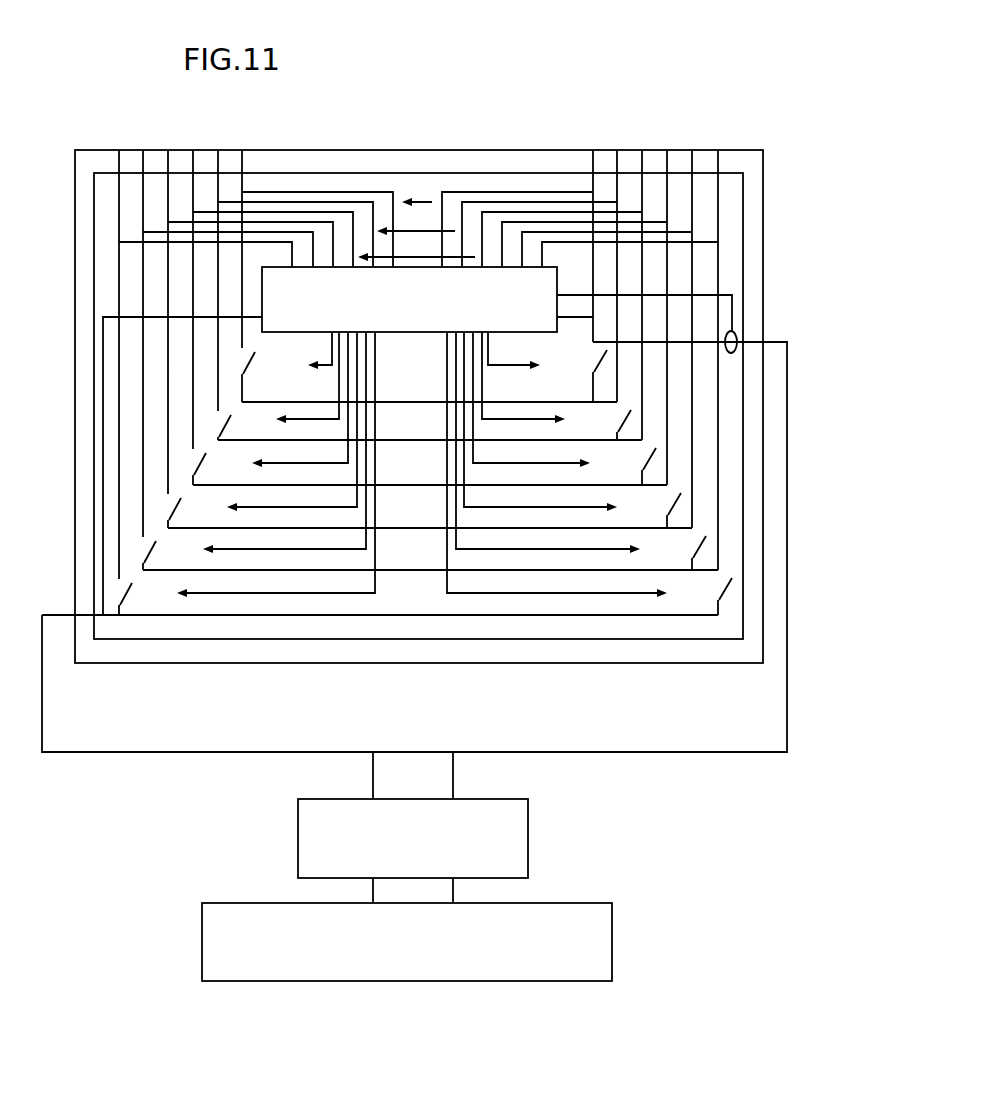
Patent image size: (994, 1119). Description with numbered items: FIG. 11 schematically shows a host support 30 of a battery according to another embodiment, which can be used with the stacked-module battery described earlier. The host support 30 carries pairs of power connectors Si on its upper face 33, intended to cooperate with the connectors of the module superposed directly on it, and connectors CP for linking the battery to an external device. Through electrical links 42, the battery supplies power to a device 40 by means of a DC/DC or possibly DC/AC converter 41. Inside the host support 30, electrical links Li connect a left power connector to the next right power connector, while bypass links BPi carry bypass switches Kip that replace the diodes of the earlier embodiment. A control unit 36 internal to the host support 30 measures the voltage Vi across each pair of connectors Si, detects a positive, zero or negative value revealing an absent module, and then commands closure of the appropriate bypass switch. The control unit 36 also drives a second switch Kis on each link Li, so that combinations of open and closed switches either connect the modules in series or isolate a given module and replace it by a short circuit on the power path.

The host support 30 is at (768, 140).
The upper face 33 is at (398, 150).
The control unit 36 is at (492, 269).
The device 40 is at (612, 953).
The DC/DC or DC/AC converter 41 is at (528, 807).
The electrical links 42 is at (372, 894).